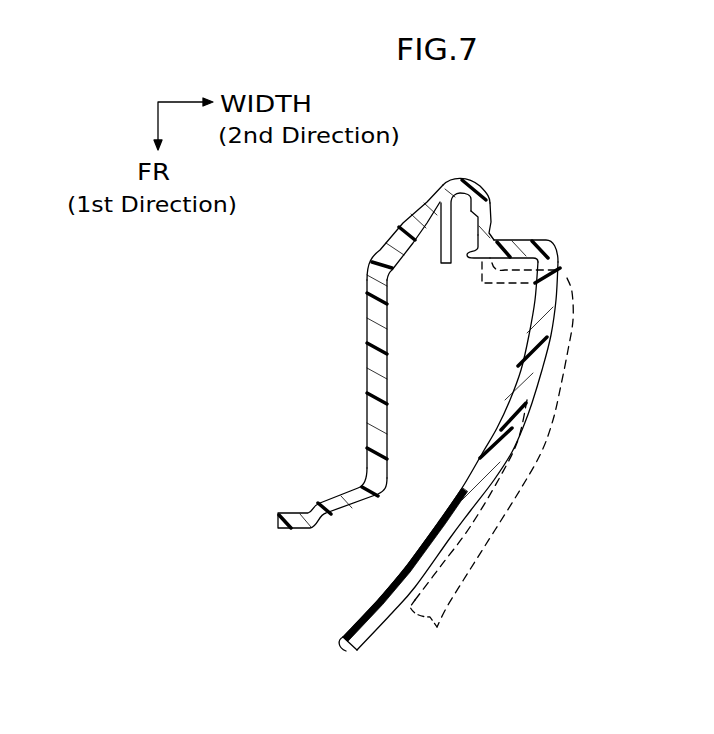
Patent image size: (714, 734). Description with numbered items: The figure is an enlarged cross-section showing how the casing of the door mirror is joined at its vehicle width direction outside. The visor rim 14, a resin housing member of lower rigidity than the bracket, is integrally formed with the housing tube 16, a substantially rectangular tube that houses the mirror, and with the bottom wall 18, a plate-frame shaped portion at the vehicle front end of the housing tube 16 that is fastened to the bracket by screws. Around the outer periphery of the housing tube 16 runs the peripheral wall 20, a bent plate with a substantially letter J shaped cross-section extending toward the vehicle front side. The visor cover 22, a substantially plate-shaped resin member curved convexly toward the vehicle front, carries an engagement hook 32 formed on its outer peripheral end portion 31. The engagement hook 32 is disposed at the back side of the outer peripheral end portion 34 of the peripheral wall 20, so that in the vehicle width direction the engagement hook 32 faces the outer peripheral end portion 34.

The visor rim 14 is at (448, 184).
The housing tube 16 is at (368, 348).
The bottom wall 18 is at (284, 530).
The peripheral wall 20 is at (403, 237).
The visor cover 22 is at (382, 622).
The outer peripheral end portion 31 is at (512, 241).
The engagement hook 32 is at (470, 252).
The outer peripheral end portion 34 is at (490, 233).